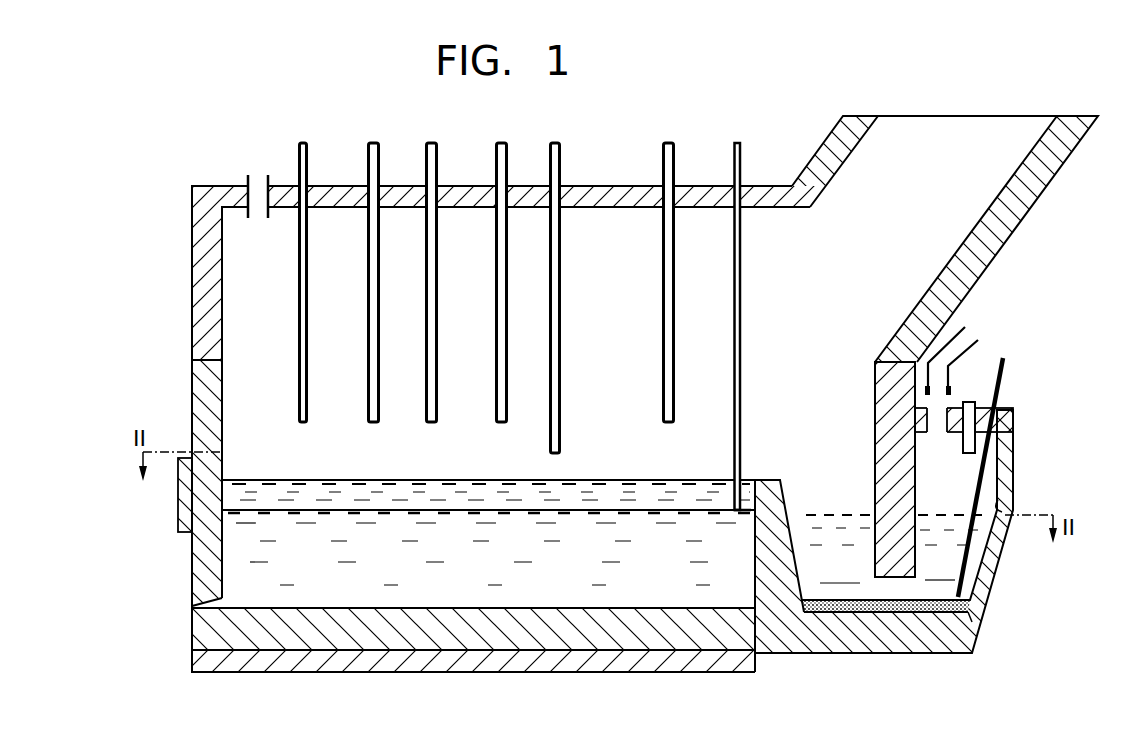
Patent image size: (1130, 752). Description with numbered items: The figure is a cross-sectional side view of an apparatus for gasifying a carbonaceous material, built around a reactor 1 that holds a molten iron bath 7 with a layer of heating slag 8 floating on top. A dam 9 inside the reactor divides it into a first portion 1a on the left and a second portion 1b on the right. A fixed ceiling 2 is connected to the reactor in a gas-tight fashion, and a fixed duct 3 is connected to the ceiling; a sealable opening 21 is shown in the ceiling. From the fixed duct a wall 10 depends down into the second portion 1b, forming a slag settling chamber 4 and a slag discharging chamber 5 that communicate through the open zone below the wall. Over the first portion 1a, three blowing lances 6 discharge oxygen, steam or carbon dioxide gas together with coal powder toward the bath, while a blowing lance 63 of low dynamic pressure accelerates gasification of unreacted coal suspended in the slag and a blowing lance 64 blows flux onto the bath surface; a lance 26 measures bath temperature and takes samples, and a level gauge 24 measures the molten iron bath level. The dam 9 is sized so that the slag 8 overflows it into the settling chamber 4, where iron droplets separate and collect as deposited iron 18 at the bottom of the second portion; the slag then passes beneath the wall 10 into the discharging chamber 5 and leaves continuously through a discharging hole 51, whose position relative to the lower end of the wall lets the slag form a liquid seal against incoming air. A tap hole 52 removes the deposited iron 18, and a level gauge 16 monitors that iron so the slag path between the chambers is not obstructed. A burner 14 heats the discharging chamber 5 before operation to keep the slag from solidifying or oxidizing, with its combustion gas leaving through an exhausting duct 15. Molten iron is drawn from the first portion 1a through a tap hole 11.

The reactor 1 is at (186, 388).
The first portion of reactor 1a is at (192, 552).
The second portion of reactor 1b is at (988, 575).
The tap hole 11 is at (192, 605).
The fixed ceiling 2 is at (190, 238).
The opening in cover 21 is at (257, 184).
The fixed duct 3 is at (993, 254).
The slag settling chamber 4 is at (873, 555).
The slag discharging chamber 5 is at (948, 571).
The blowing lances 6 is at (367, 270).
The molten iron bath 7 is at (495, 566).
The heating slag 8 is at (497, 507).
The dam 9 is at (765, 480).
The wall 10 is at (875, 409).
The burner 14 is at (963, 447).
The exhausting duct 15 is at (950, 360).
The level gauge 16 is at (978, 479).
The deposited iron 18 is at (898, 614).
The level gauge 24 is at (742, 275).
The lance 26 is at (563, 275).
The discharging hole 51 is at (1008, 512).
The tap hole 52 is at (974, 622).
The blowing lance 63 is at (675, 275).
The blowing lance 64 is at (298, 270).